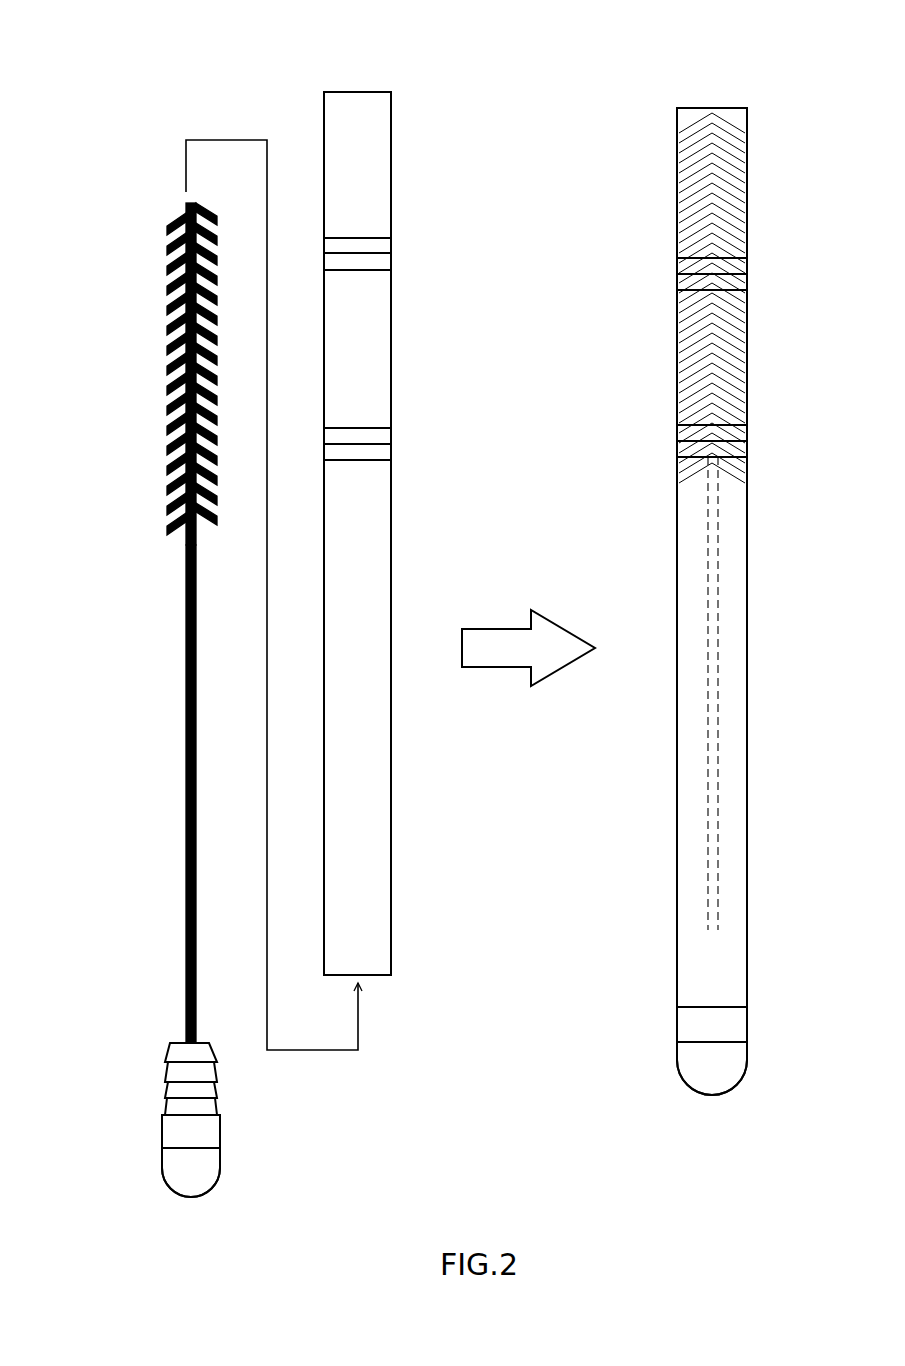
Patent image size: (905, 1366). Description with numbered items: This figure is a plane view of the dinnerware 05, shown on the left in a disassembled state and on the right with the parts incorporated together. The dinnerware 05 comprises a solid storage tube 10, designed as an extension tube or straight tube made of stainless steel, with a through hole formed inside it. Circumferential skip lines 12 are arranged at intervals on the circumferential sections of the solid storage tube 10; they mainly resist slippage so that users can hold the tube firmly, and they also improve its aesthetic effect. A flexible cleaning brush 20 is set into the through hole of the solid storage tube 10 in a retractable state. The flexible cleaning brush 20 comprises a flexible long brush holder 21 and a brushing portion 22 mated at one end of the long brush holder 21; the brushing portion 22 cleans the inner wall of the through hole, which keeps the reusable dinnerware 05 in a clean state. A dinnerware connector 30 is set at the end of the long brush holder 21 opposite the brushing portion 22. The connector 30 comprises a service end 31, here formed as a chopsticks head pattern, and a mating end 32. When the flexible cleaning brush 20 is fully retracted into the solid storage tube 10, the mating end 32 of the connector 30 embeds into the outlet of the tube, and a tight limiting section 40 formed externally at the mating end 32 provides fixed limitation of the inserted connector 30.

The dinnerware 05 is at (278, 106).
The solid storage tube 10 is at (391, 312).
The circumferential skip lines 12 is at (358, 238).
The flexible cleaning brush 20 is at (127, 623).
The long brush holder 21 is at (186, 750).
The brushing portion 22 is at (167, 366).
The dinnerware connector 30 is at (431, 1121).
The service end 31 is at (172, 1190).
The mating end 32 is at (160, 1100).
The tight limiting section 40 is at (166, 1053).